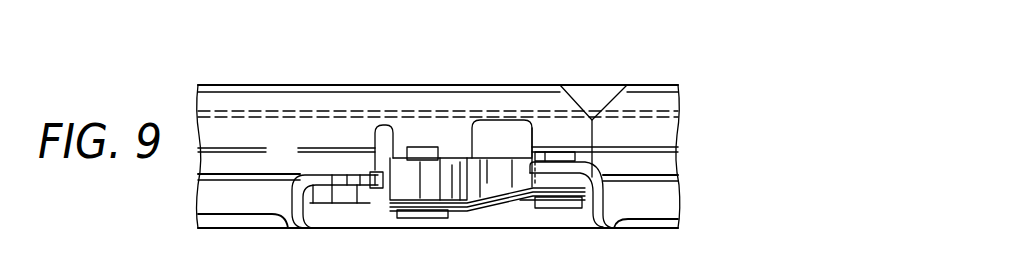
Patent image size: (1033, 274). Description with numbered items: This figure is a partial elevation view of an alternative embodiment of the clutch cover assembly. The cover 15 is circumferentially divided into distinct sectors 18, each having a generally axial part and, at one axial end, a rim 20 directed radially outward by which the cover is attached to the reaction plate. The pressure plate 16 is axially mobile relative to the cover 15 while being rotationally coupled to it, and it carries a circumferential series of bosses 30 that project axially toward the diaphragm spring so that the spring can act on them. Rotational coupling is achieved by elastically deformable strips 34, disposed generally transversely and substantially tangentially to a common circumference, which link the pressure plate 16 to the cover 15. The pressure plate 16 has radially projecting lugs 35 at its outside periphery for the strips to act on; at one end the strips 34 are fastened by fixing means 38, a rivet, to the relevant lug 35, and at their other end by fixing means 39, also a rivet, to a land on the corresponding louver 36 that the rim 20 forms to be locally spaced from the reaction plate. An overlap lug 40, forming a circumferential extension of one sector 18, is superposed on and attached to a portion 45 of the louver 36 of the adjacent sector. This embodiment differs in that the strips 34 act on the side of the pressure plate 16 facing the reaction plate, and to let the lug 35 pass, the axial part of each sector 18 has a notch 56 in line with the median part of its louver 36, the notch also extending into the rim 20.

The cover 15 is at (683, 121).
The pressure plate 16 is at (308, 210).
The sectors 18 is at (553, 86).
The rim 20 is at (322, 171).
The bosses 30 is at (385, 132).
The elastically deformable strips 34 is at (493, 206).
The lugs 35 is at (418, 193).
The louver 36 is at (343, 201).
The fixing means 38 is at (420, 150).
The fixing means 39 is at (558, 158).
The overlap lug 40 is at (564, 188).
The portion 45 is at (588, 167).
The notch 56 is at (512, 128).